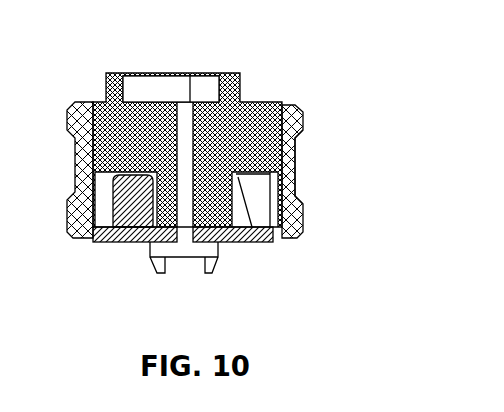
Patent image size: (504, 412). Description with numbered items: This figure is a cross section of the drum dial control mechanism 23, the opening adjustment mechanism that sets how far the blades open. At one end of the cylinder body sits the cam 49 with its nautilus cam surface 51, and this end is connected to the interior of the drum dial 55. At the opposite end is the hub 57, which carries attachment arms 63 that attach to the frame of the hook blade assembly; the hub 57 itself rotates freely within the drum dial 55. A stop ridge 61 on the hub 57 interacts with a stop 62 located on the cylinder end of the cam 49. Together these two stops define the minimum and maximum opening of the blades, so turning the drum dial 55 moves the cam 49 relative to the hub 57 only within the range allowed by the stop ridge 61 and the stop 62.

The drum dial control mechanism 23 is at (305, 113).
The cam 49 is at (262, 102).
The nautilus cam surface 51 is at (142, 73).
The drum dial 55 is at (295, 160).
The hub 57 is at (113, 243).
The stop ridge 61 is at (110, 192).
The stop 62 is at (238, 200).
The attachment arms 63 is at (208, 267).